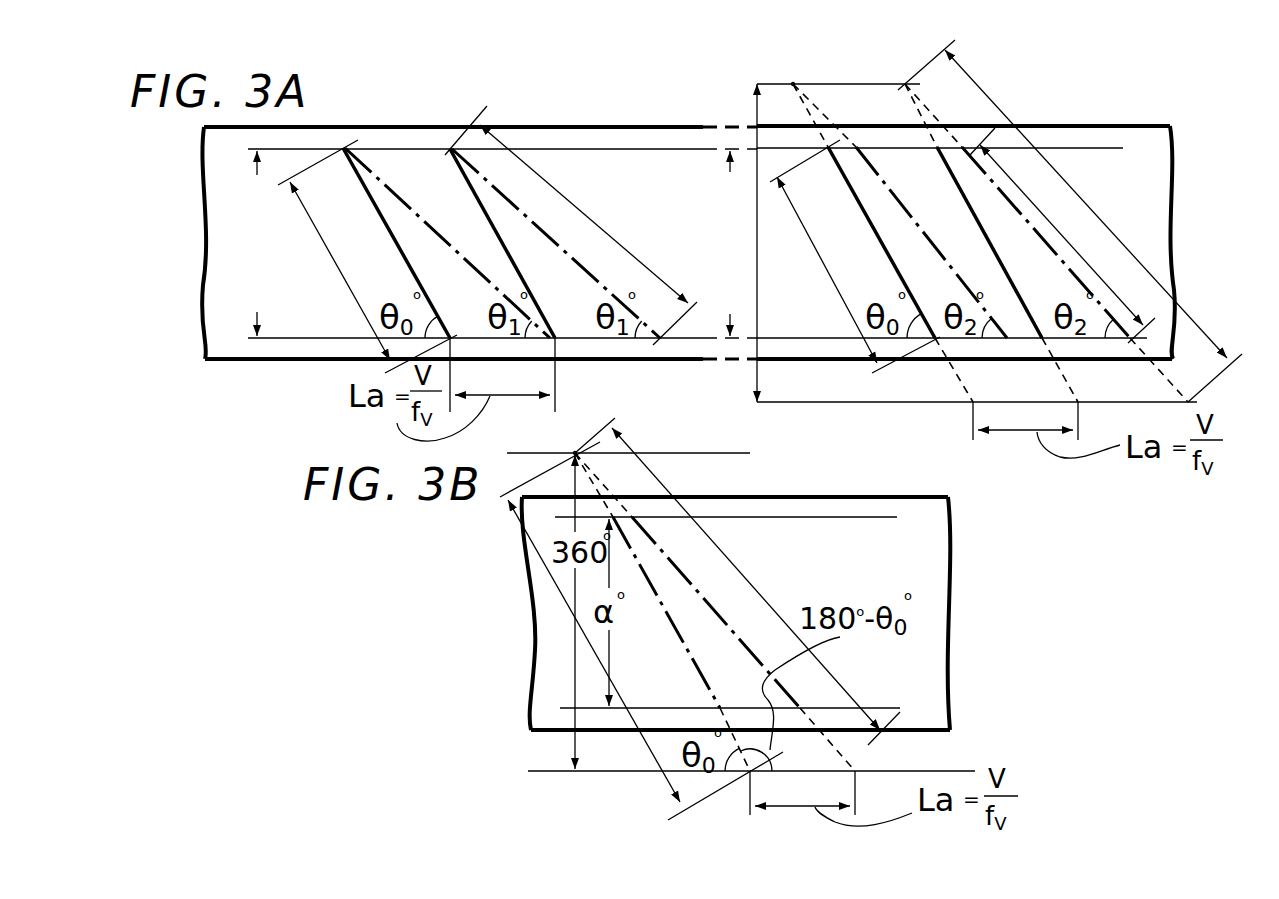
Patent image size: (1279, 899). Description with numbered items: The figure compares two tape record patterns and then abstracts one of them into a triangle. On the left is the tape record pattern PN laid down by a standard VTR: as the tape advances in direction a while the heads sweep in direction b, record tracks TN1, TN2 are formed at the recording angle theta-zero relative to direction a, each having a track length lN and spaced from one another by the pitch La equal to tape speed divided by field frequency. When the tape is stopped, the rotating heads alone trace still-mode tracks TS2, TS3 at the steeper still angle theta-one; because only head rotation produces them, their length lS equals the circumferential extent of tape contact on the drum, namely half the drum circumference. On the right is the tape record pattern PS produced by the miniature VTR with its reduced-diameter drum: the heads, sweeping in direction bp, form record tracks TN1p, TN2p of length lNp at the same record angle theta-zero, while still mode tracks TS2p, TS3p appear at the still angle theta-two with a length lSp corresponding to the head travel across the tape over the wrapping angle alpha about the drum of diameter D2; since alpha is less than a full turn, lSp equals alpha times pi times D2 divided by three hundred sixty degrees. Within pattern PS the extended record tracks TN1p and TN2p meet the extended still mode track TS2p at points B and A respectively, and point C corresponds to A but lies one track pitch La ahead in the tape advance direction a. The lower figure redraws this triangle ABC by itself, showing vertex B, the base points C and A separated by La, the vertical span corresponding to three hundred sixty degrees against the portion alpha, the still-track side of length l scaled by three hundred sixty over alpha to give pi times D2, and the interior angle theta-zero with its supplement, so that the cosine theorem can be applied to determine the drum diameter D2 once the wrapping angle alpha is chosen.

In FIG. 3A, the record track TN1 is at (351, 157).
In FIG. 3A, the record track TN2 is at (463, 168).
In FIG. 3A, the still-mode track TS2 is at (452, 250).
In FIG. 3B, the still-mode track TS2 is at (647, 580).
In FIG. 3A, the still-mode track TS3 is at (563, 250).
In FIG. 3B, the still-mode track TS3 is at (687, 580).
In FIG. 3A, the record track TN1p is at (860, 182).
In FIG. 3A, the record track TN2p is at (975, 205).
In FIG. 3A, the still mode track TS2p is at (932, 244).
In FIG. 3A, the still mode track TS3p is at (1046, 244).
In FIG. 3A, the tape record pattern PN is at (434, 117).
In FIG. 3A, the tape record pattern PS is at (885, 79).
In FIG. 3A, the direction of tape advancement a is at (210, 376).
In FIG. 3A, the head rotation direction b is at (402, 191).
In FIG. 3A, the head rotation direction bp is at (822, 160).
In FIG. 3A, the point B is at (792, 69).
In FIG. 3B, the point B is at (568, 437).
In FIG. 3A, the point C is at (954, 393).
In FIG. 3B, the point C is at (735, 762).
In FIG. 3A, the point A is at (1074, 393).
In FIG. 3B, the point A is at (842, 762).
In FIG. 3A, the track length lN is at (336, 265).
In FIG. 3A, the still-mode track length lS is at (678, 214).
In FIG. 3A, the track length lNp is at (810, 258).
In FIG. 3A, the still mode track length lSp is at (1022, 172).
In FIG. 3A, the drum diameter D2 is at (1102, 235).
In FIG. 3B, the drum diameter D2 is at (754, 604).
In FIG. 3B, the track length l is at (580, 686).